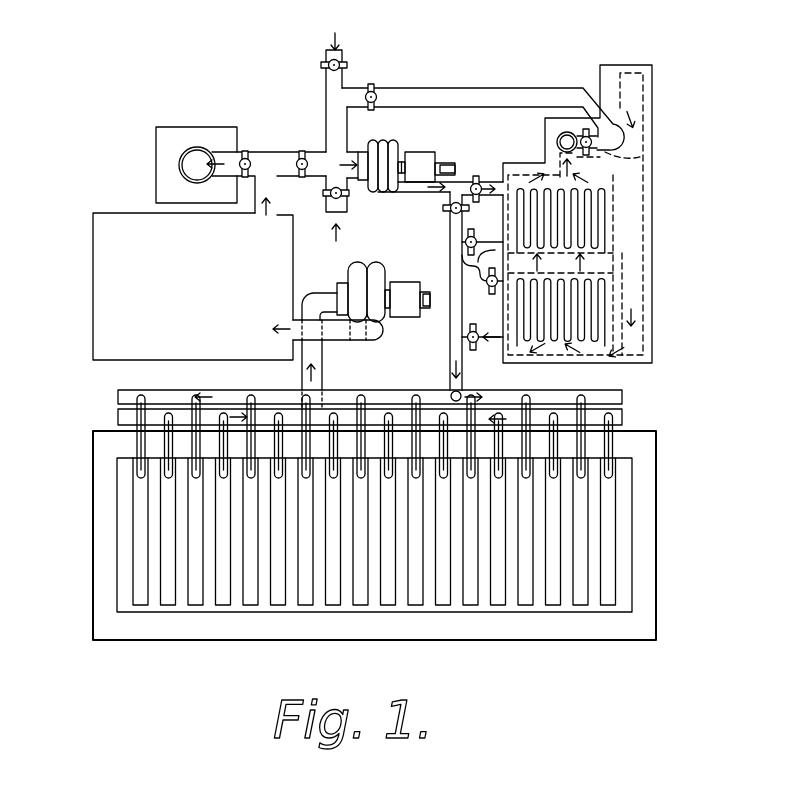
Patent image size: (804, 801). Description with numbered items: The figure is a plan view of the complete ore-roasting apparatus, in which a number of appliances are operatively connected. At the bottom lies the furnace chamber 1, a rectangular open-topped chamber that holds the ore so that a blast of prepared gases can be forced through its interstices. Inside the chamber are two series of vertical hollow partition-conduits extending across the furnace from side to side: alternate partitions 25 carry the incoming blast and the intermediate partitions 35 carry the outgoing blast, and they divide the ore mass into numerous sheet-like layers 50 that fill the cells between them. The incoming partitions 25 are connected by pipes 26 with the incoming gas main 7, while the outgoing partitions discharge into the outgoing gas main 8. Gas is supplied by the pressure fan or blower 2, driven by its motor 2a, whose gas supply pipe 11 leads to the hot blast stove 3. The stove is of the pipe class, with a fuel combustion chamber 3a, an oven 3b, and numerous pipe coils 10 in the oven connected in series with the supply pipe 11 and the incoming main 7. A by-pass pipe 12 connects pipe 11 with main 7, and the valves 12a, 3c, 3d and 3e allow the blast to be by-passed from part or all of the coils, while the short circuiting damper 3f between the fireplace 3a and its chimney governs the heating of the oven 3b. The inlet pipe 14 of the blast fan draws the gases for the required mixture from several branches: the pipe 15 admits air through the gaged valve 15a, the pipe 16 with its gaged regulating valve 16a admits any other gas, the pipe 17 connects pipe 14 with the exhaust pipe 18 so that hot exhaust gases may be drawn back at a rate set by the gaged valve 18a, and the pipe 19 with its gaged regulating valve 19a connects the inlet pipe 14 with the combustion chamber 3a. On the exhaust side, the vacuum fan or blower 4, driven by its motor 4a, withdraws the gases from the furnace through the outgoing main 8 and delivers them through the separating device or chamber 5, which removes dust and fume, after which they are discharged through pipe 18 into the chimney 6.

The furnace chamber 1 is at (125, 585).
The pressure fan or blower 2 is at (392, 146).
The motor 2a is at (424, 156).
The hot blast stove 3 is at (652, 361).
The fuel combustion chamber 3a is at (640, 97).
The oven 3b is at (606, 260).
The valve 3c is at (482, 231).
The valve 3d is at (491, 288).
The valve 3e is at (476, 346).
The short circuiting damper 3f is at (615, 151).
The vacuum fan or blower 4 is at (368, 263).
The motor 4a is at (408, 282).
The separating device or chamber 5 is at (193, 279).
The chimney 6 is at (187, 165).
The incoming gas main 7 is at (397, 393).
The outgoing gas main 8 is at (343, 414).
The pipe coils 10 is at (600, 290).
The gas supply pipe 11 is at (420, 190).
The by-pass pipe 12 is at (449, 330).
The valve 12a is at (446, 212).
The inlet pipe 14 is at (352, 158).
The pipe 15 is at (334, 240).
The gaged valve 15a is at (329, 197).
The pipe 16 is at (334, 110).
The gaged regulating valve 16a is at (343, 64).
The pipe 17 is at (317, 163).
The pipe 18 is at (264, 166).
The gaged valve 18a is at (248, 150).
The pipe 19 is at (468, 90).
The gaged regulating valve 19a is at (375, 98).
The partition-conduit 25 is at (190, 611).
The pipe 26 is at (192, 437).
The partition-conduit 35 is at (224, 441).
The ore layer 50 is at (234, 594).